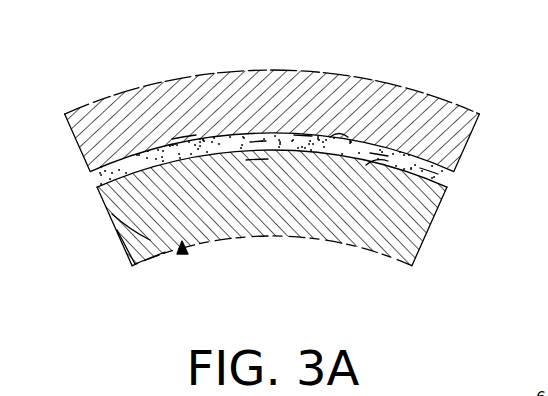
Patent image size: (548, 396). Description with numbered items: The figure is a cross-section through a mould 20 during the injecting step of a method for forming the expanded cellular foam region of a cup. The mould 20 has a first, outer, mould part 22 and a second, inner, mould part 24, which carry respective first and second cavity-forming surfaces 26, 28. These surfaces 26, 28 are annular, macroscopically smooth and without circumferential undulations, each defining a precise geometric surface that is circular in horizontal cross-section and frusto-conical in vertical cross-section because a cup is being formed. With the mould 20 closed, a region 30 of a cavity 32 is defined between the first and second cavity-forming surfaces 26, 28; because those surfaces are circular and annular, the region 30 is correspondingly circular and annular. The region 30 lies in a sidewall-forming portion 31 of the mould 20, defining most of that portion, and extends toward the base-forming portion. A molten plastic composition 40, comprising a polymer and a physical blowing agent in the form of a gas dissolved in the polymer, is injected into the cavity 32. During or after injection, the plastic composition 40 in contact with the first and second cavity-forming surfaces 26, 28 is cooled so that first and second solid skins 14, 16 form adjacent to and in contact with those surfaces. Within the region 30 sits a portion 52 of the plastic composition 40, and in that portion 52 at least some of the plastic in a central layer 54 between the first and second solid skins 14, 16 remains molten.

The first, outer, mould part 22 is at (101, 116).
The first cavity-forming surface 26 is at (183, 137).
The cavity 32 is at (258, 147).
The portion of the plastic composition 52 is at (302, 139).
The first solid skin 14 is at (332, 137).
The central layer 54 is at (379, 155).
The region of the cavity 30 is at (429, 172).
The molten plastic composition 40 is at (95, 178).
The sidewall-forming portion 31 is at (131, 216).
The second, inner, mould part 24 is at (160, 248).
The mould 20 is at (186, 253).
The second cavity-forming surface 28 is at (257, 150).
The second solid skin 16 is at (374, 163).